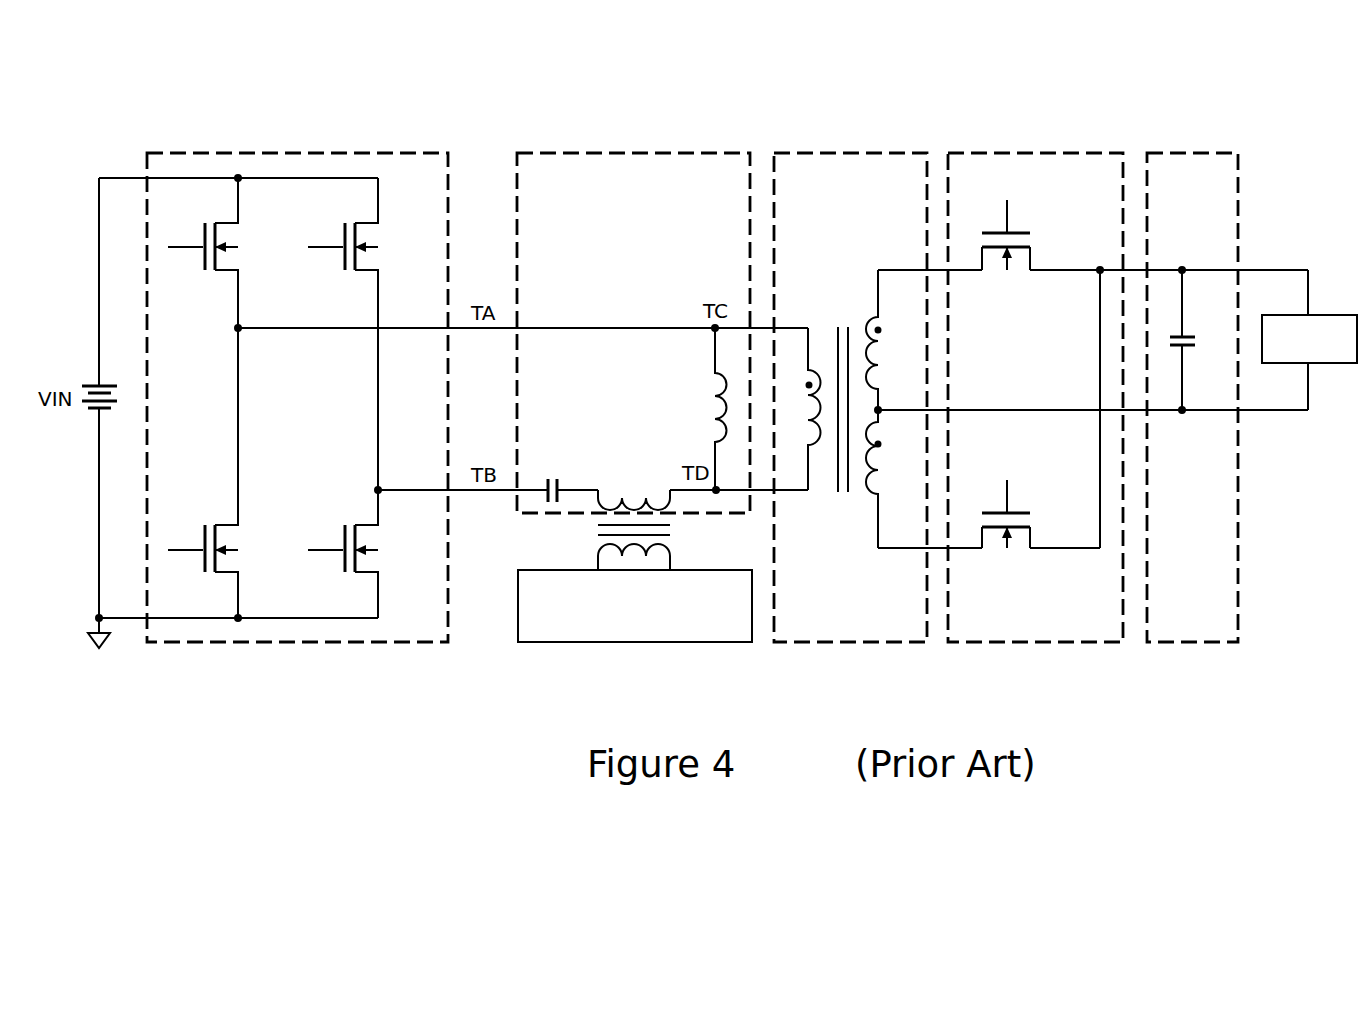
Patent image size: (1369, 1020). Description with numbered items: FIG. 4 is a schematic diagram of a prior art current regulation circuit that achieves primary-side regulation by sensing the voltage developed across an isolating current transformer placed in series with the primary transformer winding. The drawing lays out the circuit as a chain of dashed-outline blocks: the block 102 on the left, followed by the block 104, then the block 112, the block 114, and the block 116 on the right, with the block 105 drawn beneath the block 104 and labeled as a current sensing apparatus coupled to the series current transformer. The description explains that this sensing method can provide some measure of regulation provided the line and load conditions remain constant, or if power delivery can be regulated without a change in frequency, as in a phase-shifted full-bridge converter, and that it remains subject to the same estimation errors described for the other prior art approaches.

The switch network 102 is at (214, 150).
The resonant tank 104 is at (574, 150).
The current sensing apparatus 105 is at (538, 644).
The transformer 112 is at (868, 148).
The rectifier 114 is at (1066, 148).
The output filter 116 is at (1212, 148).